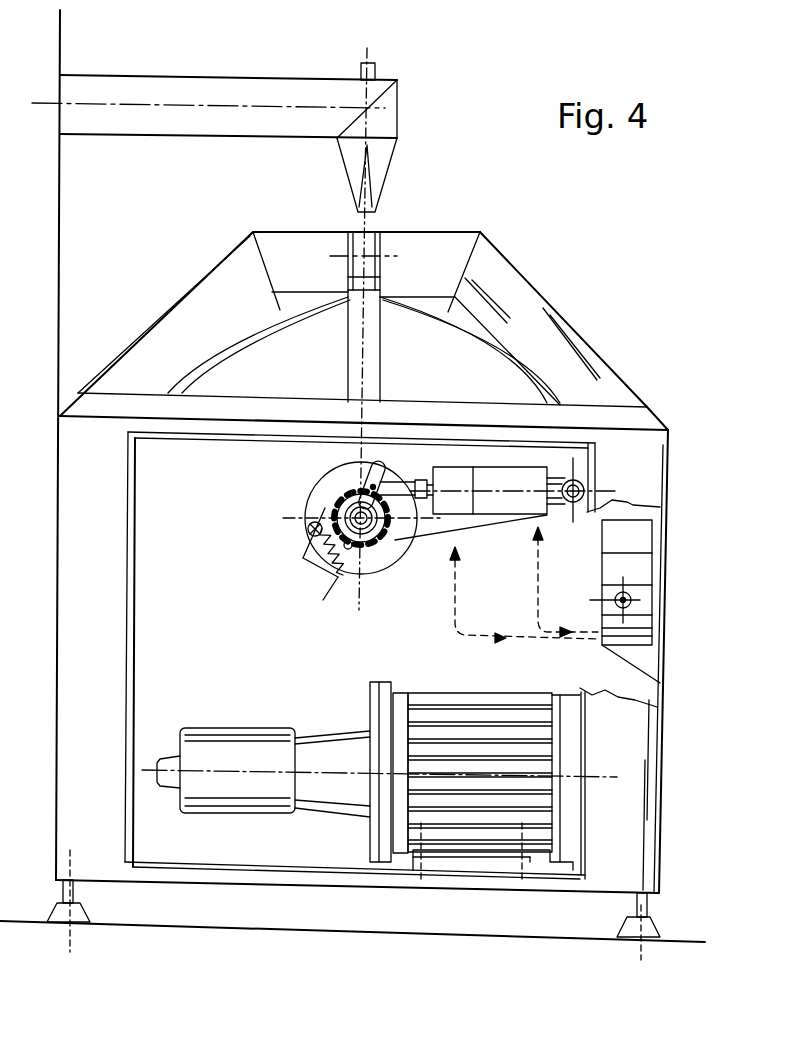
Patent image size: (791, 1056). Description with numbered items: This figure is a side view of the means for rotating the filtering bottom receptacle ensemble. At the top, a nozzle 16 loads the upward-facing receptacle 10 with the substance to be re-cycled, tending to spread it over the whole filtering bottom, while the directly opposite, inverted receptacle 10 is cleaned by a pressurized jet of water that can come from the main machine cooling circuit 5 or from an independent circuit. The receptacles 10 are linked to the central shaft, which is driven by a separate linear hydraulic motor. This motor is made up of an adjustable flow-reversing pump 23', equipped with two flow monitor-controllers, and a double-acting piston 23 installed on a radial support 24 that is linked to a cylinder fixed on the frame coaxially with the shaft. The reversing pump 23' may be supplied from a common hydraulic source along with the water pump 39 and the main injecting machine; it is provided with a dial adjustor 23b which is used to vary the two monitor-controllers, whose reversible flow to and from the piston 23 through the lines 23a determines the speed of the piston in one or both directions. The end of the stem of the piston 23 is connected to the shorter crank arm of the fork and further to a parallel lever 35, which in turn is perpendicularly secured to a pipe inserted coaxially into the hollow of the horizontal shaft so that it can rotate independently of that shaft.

The main machine cooling circuit 5 is at (15, 222).
The nozzle 16 is at (378, 162).
The receptacle 10 is at (518, 307).
The double-acting piston 23 is at (535, 437).
The radial support 24 is at (435, 525).
The parallel lever 35 is at (345, 498).
The lines 23a is at (455, 622).
The adjustable flow-reversing pump 23' is at (665, 601).
The dial adjustor 23b is at (633, 597).
The water pump 39 is at (427, 730).